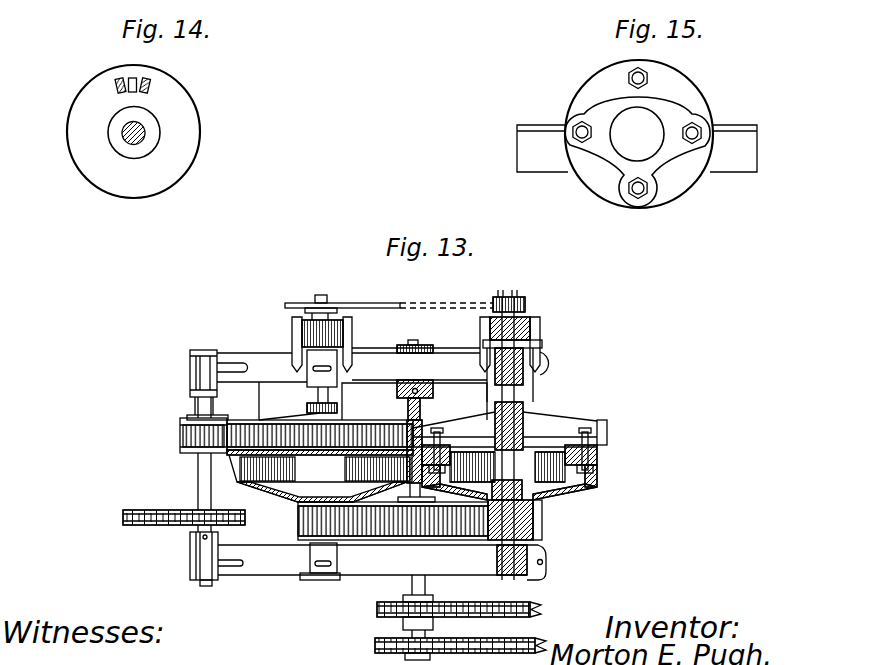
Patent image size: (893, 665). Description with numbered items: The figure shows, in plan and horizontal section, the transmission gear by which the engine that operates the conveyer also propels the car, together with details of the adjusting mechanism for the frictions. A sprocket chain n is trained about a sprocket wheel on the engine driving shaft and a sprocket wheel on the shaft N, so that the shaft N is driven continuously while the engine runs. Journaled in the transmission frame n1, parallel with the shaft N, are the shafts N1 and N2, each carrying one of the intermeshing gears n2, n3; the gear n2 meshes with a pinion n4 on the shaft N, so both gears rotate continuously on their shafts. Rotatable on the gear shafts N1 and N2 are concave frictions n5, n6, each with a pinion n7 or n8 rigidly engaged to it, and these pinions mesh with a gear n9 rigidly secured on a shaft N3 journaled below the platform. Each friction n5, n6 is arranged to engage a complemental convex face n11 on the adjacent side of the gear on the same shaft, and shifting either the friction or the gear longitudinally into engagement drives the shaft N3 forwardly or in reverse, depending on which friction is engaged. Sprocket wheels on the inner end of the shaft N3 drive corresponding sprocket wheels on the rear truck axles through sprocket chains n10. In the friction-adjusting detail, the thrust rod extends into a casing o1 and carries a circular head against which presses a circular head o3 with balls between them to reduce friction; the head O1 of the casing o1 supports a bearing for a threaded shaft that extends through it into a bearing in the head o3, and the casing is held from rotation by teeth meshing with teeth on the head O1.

In FIG. 14, the casing o1 is at (149, 84).
In FIG. 14, the circular head o3 is at (190, 121).
In FIG. 15, the head of the casing O1 is at (685, 93).
In FIG. 13, the shaft N is at (197, 481).
In FIG. 13, the shaft N1 is at (308, 392).
In FIG. 13, the shaft N2 is at (525, 415).
In FIG. 13, the shaft N3 is at (422, 408).
In FIG. 13, the sprocket chain n is at (125, 523).
In FIG. 13, the transmission frame n1 is at (258, 365).
In FIG. 13, the gear n2 is at (262, 420).
In FIG. 13, the gear n3 is at (608, 424).
In FIG. 13, the pinion n4 is at (180, 427).
In FIG. 13, the concave friction n5 is at (280, 482).
In FIG. 13, the concave friction n6 is at (572, 480).
In FIG. 13, the pinion n7 is at (303, 543).
In FIG. 13, the pinion n8 is at (535, 533).
In FIG. 13, the gear n9 is at (380, 540).
In FIG. 13, the sprocket chains n10 is at (533, 610).
In FIG. 13, the complemental convex faces n11 is at (600, 450).